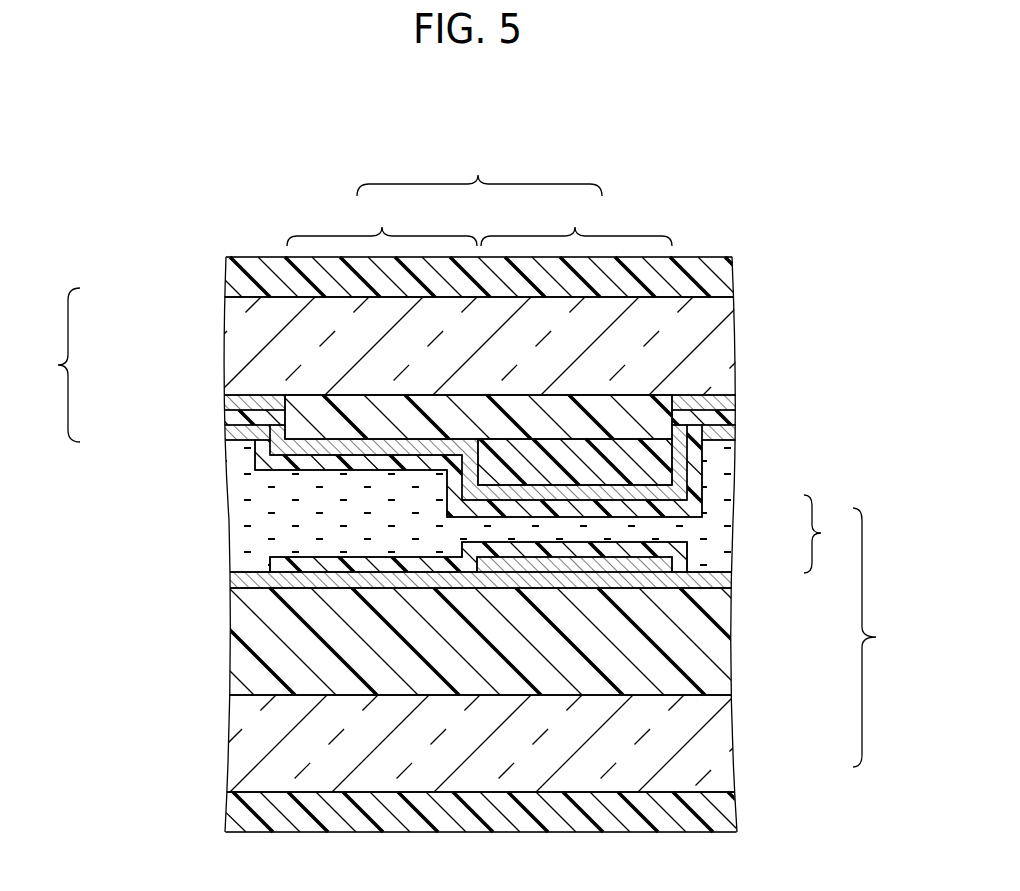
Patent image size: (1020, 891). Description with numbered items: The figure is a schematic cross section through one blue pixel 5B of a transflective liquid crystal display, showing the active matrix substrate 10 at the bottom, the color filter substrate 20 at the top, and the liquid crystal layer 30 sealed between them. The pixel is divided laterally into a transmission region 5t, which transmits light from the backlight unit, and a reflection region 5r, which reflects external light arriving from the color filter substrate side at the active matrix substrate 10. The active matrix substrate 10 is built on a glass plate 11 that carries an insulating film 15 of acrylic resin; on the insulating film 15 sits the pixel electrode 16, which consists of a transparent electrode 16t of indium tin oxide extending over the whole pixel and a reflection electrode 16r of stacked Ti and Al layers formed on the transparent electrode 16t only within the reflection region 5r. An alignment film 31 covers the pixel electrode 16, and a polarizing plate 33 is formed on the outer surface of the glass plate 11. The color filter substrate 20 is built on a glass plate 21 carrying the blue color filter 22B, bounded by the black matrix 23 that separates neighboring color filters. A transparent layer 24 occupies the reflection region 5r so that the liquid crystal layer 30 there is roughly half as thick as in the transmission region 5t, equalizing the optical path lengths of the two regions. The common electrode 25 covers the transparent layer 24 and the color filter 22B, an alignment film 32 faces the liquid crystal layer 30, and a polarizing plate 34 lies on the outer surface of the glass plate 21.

The blue pixel 5B is at (479, 167).
The transmission region 5t is at (382, 220).
The reflection region 5r is at (576, 220).
The polarizing plate 34 is at (226, 278).
The glass plate 21 is at (226, 314).
The blue color filter 22B is at (318, 410).
The black matrix 23 is at (226, 400).
The common electrode 25 is at (226, 418).
The alignment film 32 is at (228, 432).
The transparent layer 24 is at (650, 466).
The liquid crystal layer 30 is at (228, 515).
The reflection electrode 16r is at (655, 535).
The transparent electrode 16t is at (640, 578).
The pixel electrode 16 is at (832, 534).
The alignment film 31 is at (230, 580).
The insulating film 15 is at (720, 645).
The glass plate 11 is at (725, 745).
The polarizing plate 33 is at (230, 815).
The color filter substrate 20 is at (51, 365).
The active matrix substrate 10 is at (883, 637).